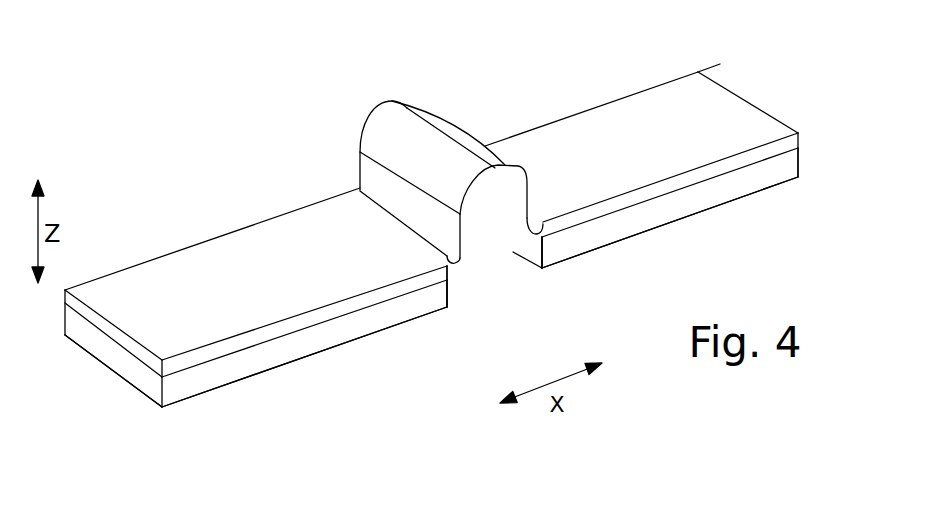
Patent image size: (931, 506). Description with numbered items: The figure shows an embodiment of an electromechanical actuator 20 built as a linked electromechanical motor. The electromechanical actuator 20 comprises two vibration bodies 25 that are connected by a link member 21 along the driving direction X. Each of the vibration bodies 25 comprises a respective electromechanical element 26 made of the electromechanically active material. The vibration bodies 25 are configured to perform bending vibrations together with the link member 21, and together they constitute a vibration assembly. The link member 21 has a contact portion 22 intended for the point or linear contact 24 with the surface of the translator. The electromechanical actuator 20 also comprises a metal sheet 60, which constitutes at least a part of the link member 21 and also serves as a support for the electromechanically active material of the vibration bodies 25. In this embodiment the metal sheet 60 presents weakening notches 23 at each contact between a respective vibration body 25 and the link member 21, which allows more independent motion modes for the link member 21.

The electromechanical actuator 20 is at (722, 90).
The link member 21 is at (370, 133).
The contact portion 22 is at (487, 213).
The weakening notches 23 is at (457, 270).
The point or linear contact 24 is at (401, 101).
The vibration bodies 25 is at (187, 327).
The electromechanical element 26 is at (152, 387).
The metal sheet 60 is at (700, 87).